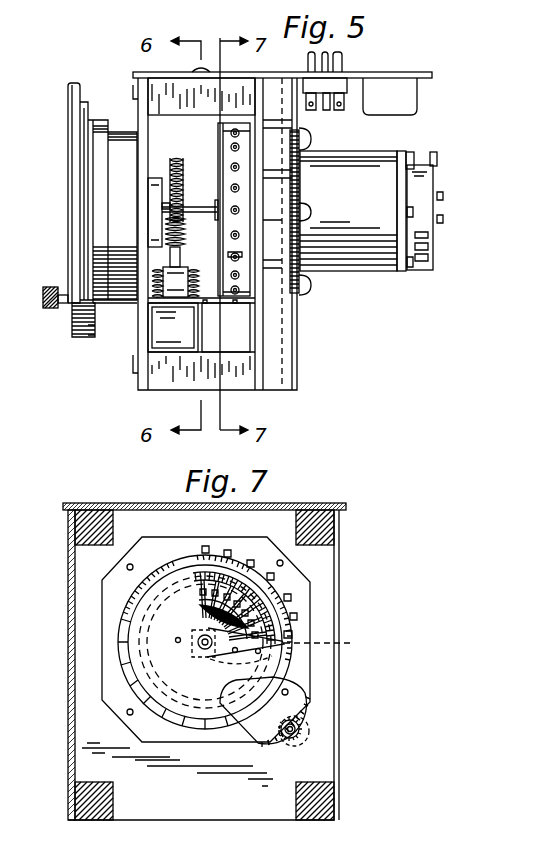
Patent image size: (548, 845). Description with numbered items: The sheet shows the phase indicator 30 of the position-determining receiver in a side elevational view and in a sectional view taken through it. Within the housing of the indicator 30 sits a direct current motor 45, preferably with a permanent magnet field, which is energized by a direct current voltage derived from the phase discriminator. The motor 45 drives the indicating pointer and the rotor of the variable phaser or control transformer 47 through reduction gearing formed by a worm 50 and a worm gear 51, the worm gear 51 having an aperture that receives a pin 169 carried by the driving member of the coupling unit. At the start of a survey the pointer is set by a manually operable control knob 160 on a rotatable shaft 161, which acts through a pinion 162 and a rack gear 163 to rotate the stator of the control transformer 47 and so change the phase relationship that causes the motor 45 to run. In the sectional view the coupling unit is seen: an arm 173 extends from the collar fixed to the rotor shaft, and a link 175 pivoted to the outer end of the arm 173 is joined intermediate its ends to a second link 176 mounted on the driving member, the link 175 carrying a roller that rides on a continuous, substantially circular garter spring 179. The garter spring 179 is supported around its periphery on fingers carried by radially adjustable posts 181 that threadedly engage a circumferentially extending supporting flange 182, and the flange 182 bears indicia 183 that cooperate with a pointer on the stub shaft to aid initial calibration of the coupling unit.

In FIG. 5, the phase indicator 30 is at (298, 355).
In FIG. 5, the direct current motor 45 is at (190, 340).
In FIG. 5, the control transformer 47 is at (347, 148).
In FIG. 5, the worm 50 is at (178, 235).
In FIG. 5, the worm gear 51 is at (184, 180).
In FIG. 5, the control knob 160 is at (53, 308).
In FIG. 5, the rotatable shaft 161 is at (122, 303).
In FIG. 7, the rotatable shaft 161 is at (308, 731).
In FIG. 7, the pinion 162 is at (308, 705).
In FIG. 7, the rack gear 163 is at (225, 718).
In FIG. 5, the pin 169 is at (207, 195).
In FIG. 7, the pin 169 is at (187, 624).
In FIG. 7, the arm 173 is at (198, 655).
In FIG. 7, the link 175 is at (220, 665).
In FIG. 7, the second link 176 is at (299, 642).
In FIG. 7, the garter spring 179 is at (122, 654).
In FIG. 5, the radially adjustable posts 181 is at (228, 165).
In FIG. 7, the radially adjustable posts 181 is at (296, 617).
In FIG. 5, the supporting flange 182 is at (232, 255).
In FIG. 7, the supporting flange 182 is at (289, 635).
In FIG. 7, the indicia 183 is at (155, 572).